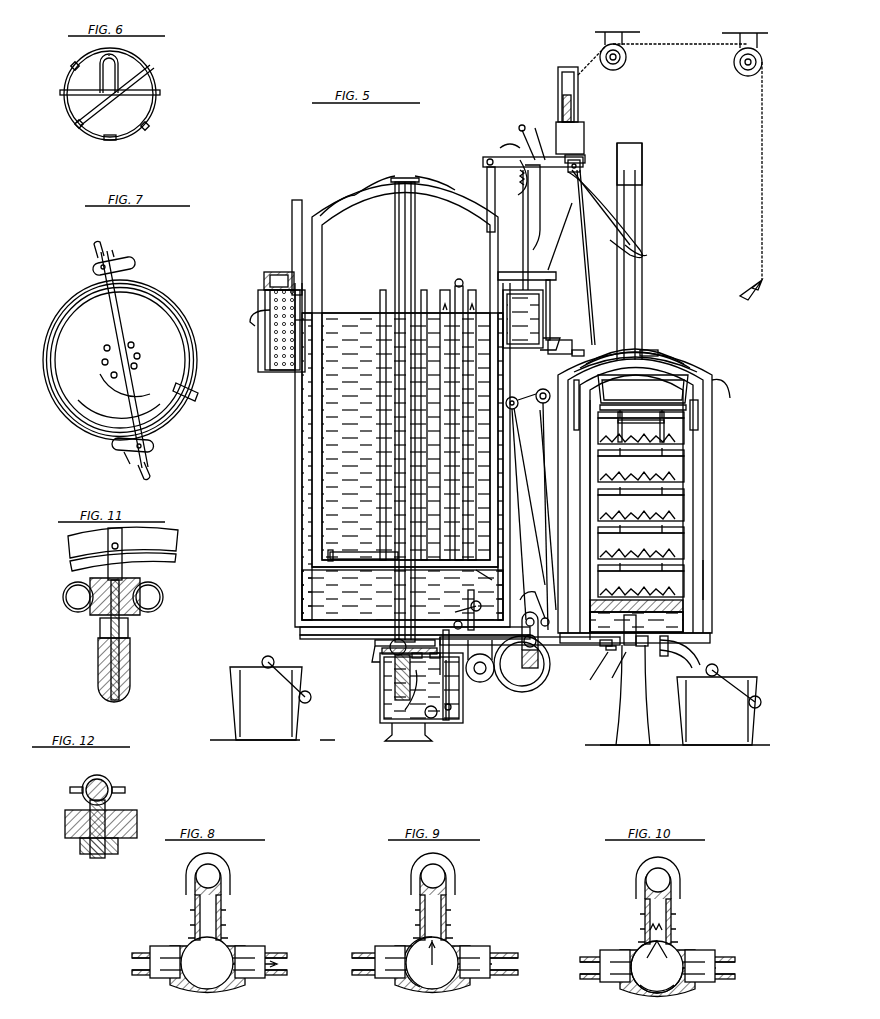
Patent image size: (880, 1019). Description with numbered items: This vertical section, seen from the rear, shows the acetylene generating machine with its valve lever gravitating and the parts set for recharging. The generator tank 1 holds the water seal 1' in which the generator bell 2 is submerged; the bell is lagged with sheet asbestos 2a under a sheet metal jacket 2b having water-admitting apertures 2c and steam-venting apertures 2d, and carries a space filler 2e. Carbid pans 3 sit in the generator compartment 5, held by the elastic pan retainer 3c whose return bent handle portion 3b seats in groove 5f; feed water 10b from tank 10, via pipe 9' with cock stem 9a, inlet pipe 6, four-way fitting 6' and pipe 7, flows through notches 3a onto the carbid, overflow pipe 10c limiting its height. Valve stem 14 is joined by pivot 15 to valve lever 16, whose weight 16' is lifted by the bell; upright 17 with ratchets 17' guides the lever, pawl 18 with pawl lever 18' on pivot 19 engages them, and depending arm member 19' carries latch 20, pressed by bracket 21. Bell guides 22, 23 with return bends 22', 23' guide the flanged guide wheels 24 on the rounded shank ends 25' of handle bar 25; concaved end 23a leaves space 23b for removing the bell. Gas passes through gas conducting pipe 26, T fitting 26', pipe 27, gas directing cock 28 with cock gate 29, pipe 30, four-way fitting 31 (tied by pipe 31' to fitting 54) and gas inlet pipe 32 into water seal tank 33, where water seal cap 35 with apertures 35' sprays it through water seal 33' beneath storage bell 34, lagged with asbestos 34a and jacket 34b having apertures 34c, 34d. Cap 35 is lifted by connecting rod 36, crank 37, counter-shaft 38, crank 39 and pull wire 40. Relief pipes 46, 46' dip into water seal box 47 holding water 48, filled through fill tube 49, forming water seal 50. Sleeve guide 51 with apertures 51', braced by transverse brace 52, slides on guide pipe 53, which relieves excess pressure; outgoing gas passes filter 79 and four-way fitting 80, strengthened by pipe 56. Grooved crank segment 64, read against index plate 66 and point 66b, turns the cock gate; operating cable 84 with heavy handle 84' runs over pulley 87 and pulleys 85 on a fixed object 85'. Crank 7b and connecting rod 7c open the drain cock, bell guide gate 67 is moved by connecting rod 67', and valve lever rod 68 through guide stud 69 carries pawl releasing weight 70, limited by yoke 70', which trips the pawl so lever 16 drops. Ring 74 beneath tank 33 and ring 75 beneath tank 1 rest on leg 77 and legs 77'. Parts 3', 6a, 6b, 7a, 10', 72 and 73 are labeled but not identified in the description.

In FIG. 7, the generator tank 1 is at (120, 373).
In FIG. 11, the generator tank 1 is at (132, 565).
In FIG. 5, the generator tank 1 is at (646, 493).
In FIG. 5, the water seal 1' is at (650, 405).
In FIG. 7, the generator bell 2 is at (70, 423).
In FIG. 11, the generator bell 2 is at (178, 541).
In FIG. 5, the generator bell 2 is at (672, 378).
In FIG. 5, the sheet asbestos 2a is at (705, 372).
In FIG. 5, the sheet metal jacket 2b is at (690, 362).
In FIG. 5, the apertures 2c is at (706, 600).
In FIG. 7, the apertures 2d is at (138, 358).
In FIG. 5, the apertures 2d is at (678, 358).
In FIG. 5, the space filler 2e is at (616, 402).
In FIG. 6, the carbid pans 3 is at (116, 94).
In FIG. 5, the carbid pans 3 is at (641, 503).
In FIG. 6, the tray bar 3' is at (115, 95).
In FIG. 5, the tray bar 3' is at (641, 446).
In FIG. 6, the notches 3a is at (104, 140).
In FIG. 5, the notches 3a is at (657, 442).
In FIG. 6, the return bent handle portion 3b is at (110, 73).
In FIG. 6, the elastic pan retainer 3c is at (154, 91).
In FIG. 5, the generator compartment 5 is at (703, 440).
In FIG. 5, the groove 5f is at (698, 420).
In FIG. 5, the feed water inlet pipe 6 is at (636, 621).
In FIG. 5, the four-way fitting 6' is at (613, 672).
In FIG. 5, the drain fitting 6a is at (608, 660).
In FIG. 5, the drain pipe 6b is at (593, 672).
In FIG. 5, the pipe 7 is at (630, 645).
In FIG. 5, the valve fitting 7a is at (652, 642).
In FIG. 5, the crank 7b is at (700, 652).
In FIG. 5, the connecting rod 7c is at (732, 672).
In FIG. 5, the pipe 9' is at (519, 508).
In FIG. 5, the rotatable cock stem 9a is at (533, 409).
In FIG. 5, the tank 10 is at (270, 331).
In FIG. 5, the feed cap 10' is at (265, 276).
In FIG. 5, the feed water 10b is at (712, 572).
In FIG. 5, the overflow pipe 10c is at (731, 396).
In FIG. 5, the valve stem 14 is at (487, 195).
In FIG. 5, the pivot 15 is at (483, 160).
In FIG. 12, the valve lever 16 is at (88, 830).
In FIG. 5, the valve lever 16 is at (622, 214).
In FIG. 5, the weight 16' is at (653, 253).
In FIG. 5, the upright 17 is at (535, 230).
In FIG. 5, the ratchets 17' is at (543, 207).
In FIG. 5, the pawl 18 is at (512, 177).
In FIG. 5, the pawl lever 18' is at (587, 146).
In FIG. 5, the pivot 19 is at (517, 141).
In FIG. 5, the depending arm member 19' is at (562, 310).
In FIG. 5, the latch 20 is at (560, 340).
In FIG. 7, the bracket 21 is at (199, 394).
In FIG. 5, the bracket 21 is at (570, 340).
In FIG. 7, the guide 22 is at (124, 263).
In FIG. 7, the return bend 22' is at (121, 248).
In FIG. 7, the bell guide 23 is at (115, 453).
In FIG. 11, the bell guide 23 is at (76, 610).
In FIG. 5, the bell guide 23 is at (644, 251).
In FIG. 7, the return bend 23' is at (127, 464).
In FIG. 5, the return bend 23' is at (634, 151).
In FIG. 5, the concaved end 23a is at (650, 352).
In FIG. 5, the space 23b is at (592, 348).
In FIG. 7, the flanged guide wheels 24 is at (101, 267).
In FIG. 11, the flanged guide wheels 24 is at (132, 615).
In FIG. 7, the handle bar 25 is at (105, 359).
In FIG. 11, the handle bar 25 is at (131, 614).
In FIG. 11, the rounded shank ends 25' is at (129, 638).
In FIG. 5, the gas conducting pipe 26 is at (565, 520).
In FIG. 5, the T fitting 26' is at (593, 657).
In FIG. 8, the pipe 27 is at (141, 976).
In FIG. 9, the pipe 27 is at (364, 976).
In FIG. 10, the pipe 27 is at (590, 980).
In FIG. 5, the pipe 27 is at (530, 654).
In FIG. 8, the gas directing cock 28 is at (222, 988).
In FIG. 9, the gas directing cock 28 is at (447, 988).
In FIG. 10, the gas directing cock 28 is at (670, 992).
In FIG. 5, the gas directing cock 28 is at (540, 662).
In FIG. 8, the cock gate 29 is at (225, 940).
In FIG. 9, the cock gate 29 is at (450, 940).
In FIG. 10, the cock gate 29 is at (640, 986).
In FIG. 5, the cock gate 29 is at (538, 663).
In FIG. 8, the pipe 30 is at (280, 952).
In FIG. 9, the pipe 30 is at (503, 952).
In FIG. 10, the pipe 30 is at (728, 956).
In FIG. 5, the pipe 30 is at (520, 692).
In FIG. 5, the four-way fitting 31 is at (464, 700).
In FIG. 5, the pipe 31' is at (437, 664).
In FIG. 5, the gas inlet pipe 32 is at (450, 290).
In FIG. 5, the water seal tank 33 is at (382, 455).
In FIG. 5, the water seal 33' is at (402, 301).
In FIG. 5, the storage bell 34 is at (320, 285).
In FIG. 5, the asbestos lagging 34a is at (360, 194).
In FIG. 5, the jacket 34b is at (335, 202).
In FIG. 5, the apertures 34c is at (312, 563).
In FIG. 5, the apertures 34d is at (395, 182).
In FIG. 5, the water seal cap 35 is at (468, 409).
In FIG. 5, the apertures 35' is at (477, 424).
In FIG. 5, the connecting rod 36 is at (488, 577).
In FIG. 5, the crank 37 is at (468, 596).
In FIG. 5, the counter-shaft 38 is at (455, 618).
In FIG. 5, the crank 39 is at (478, 613).
In FIG. 5, the pull wire 40 is at (486, 600).
In FIG. 5, the relief pipe 46 is at (464, 676).
In FIG. 5, the relief pipe 46' is at (380, 677).
In FIG. 5, the water seal box 47 is at (380, 700).
In FIG. 5, the water 48 is at (404, 712).
In FIG. 5, the fill tube 49 is at (431, 718).
In FIG. 5, the water seal 50 is at (447, 724).
In FIG. 5, the sleeve guide 51 is at (390, 410).
In FIG. 5, the apertures 51' is at (377, 411).
In FIG. 5, the transverse brace 52 is at (343, 552).
In FIG. 5, the guide pipe 53 is at (424, 290).
In FIG. 5, the fitting 54 is at (372, 655).
In FIG. 5, the pipe 56 is at (388, 646).
In FIG. 5, the grooved crank segment 64 is at (522, 665).
In FIG. 5, the index plate 66 is at (526, 590).
In FIG. 5, the point 66b is at (540, 616).
In FIG. 5, the bell guide gate 67 is at (550, 491).
In FIG. 5, the connecting rod 67' is at (531, 496).
In FIG. 12, the valve lever rod 68 is at (90, 780).
In FIG. 5, the valve lever rod 68 is at (585, 248).
In FIG. 12, the apertured rotatable guide stud 69 is at (100, 776).
In FIG. 5, the apertured rotatable guide stud 69 is at (580, 168).
In FIG. 5, the pawl releasing weight 70 is at (585, 124).
In FIG. 5, the yoke 70' is at (553, 94).
In FIG. 5, the feed spout 72 is at (256, 300).
In FIG. 5, the bucket 73 is at (302, 676).
In FIG. 5, the ring 74 is at (300, 630).
In FIG. 5, the ring 75 is at (712, 636).
In FIG. 5, the leg 77 is at (395, 731).
In FIG. 5, the legs 77' is at (630, 737).
In FIG. 5, the filter 79 is at (383, 290).
In FIG. 5, the four-way fitting 80 is at (382, 651).
In FIG. 5, the operating cable 84 is at (743, 171).
In FIG. 5, the handle 84' is at (741, 280).
In FIG. 5, the pulleys 85 is at (681, 57).
In FIG. 5, the fixed object 85' is at (663, 59).
In FIG. 5, the grooved pulley 87 is at (484, 680).